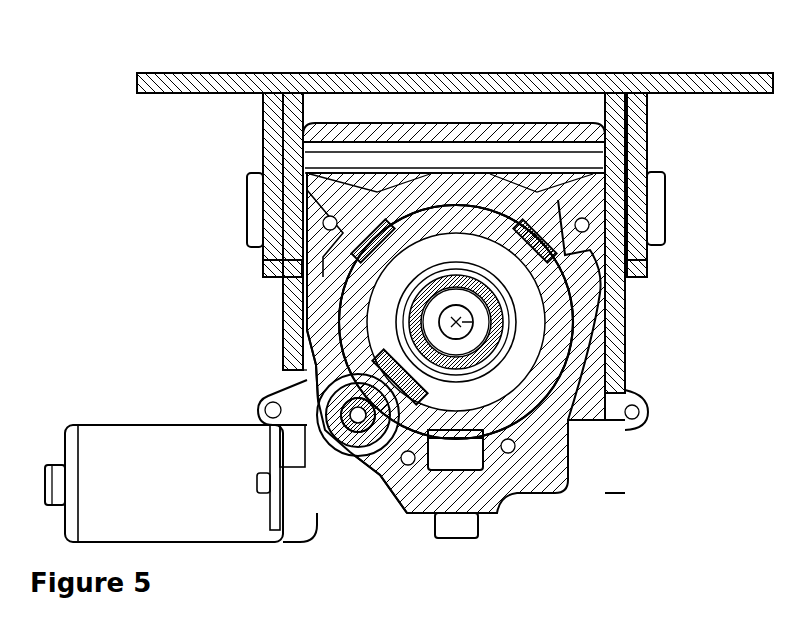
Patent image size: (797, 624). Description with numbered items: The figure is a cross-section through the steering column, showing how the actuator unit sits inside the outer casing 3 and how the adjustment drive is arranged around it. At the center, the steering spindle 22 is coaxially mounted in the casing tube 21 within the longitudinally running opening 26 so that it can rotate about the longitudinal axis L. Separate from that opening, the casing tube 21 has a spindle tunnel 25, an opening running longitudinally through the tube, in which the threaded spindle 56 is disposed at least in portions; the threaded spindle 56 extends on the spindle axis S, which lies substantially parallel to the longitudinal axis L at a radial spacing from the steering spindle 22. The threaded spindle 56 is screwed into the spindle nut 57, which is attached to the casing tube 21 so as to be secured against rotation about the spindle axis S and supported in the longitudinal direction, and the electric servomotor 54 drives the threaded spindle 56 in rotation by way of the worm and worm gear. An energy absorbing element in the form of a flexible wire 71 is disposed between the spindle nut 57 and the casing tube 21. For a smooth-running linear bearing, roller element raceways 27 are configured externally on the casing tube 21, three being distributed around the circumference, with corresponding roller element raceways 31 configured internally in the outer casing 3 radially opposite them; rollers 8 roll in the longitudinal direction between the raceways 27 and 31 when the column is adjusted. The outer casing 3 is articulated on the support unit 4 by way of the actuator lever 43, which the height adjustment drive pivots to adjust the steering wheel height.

The support unit 4 is at (437, 88).
The roller element raceways 31 is at (278, 125).
The steering spindle 22 is at (645, 230).
The outer casing 3 is at (630, 327).
The rollers 8 is at (375, 220).
The casing tube 21 is at (643, 395).
The opening 26 is at (628, 290).
The longitudinal axis L is at (627, 350).
The roller element raceways 27 is at (400, 228).
The actuator lever 43 is at (617, 450).
The flexible wire 71 is at (298, 383).
The spindle axis S is at (262, 398).
The spindle tunnel 25 is at (264, 410).
The electric servomotor 54 is at (178, 512).
The threaded spindle 56 is at (362, 445).
The spindle nut 57 is at (350, 445).